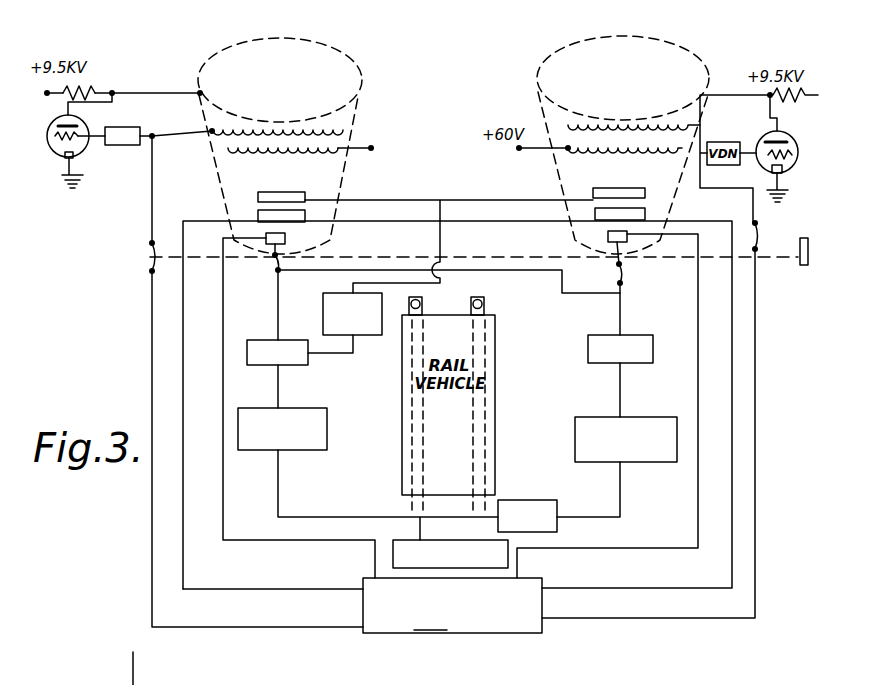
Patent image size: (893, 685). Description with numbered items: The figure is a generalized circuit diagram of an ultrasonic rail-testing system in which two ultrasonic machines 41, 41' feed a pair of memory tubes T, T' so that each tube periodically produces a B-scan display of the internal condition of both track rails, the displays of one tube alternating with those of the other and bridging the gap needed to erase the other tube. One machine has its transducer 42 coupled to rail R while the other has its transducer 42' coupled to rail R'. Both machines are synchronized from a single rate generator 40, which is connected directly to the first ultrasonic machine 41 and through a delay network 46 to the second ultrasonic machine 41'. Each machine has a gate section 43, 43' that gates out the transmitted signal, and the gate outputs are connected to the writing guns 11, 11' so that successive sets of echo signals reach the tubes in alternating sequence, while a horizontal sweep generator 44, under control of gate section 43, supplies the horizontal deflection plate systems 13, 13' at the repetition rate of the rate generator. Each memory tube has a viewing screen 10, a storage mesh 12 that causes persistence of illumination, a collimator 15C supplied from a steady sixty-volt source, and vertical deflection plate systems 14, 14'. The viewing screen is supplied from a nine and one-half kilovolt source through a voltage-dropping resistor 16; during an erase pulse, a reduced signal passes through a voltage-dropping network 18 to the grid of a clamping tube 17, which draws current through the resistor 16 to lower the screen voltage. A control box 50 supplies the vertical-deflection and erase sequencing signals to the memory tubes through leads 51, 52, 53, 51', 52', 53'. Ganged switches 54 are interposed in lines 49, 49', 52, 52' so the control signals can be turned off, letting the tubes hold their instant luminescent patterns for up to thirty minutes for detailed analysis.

The memory tube T is at (366, 36).
The memory tube T' is at (720, 37).
The viewing screen 10 is at (352, 78).
The storage mesh 12 is at (238, 130).
The collimator 15C is at (300, 150).
The horizontal deflection plate system 13 is at (291, 184).
The horizontal deflection plate system 13' is at (619, 175).
The vertical deflection plate system 14 is at (266, 198).
The vertical deflection plate system 14' is at (634, 188).
The writing gun 11 is at (296, 232).
The writing gun 11' is at (577, 231).
The voltage-dropping resistor 16 is at (86, 93).
The clamping tube 17 is at (52, 152).
The voltage-dropping network 18 is at (128, 146).
The ganged switches 54 is at (168, 238).
The line 49 is at (258, 305).
The line 49' is at (647, 305).
The horizontal sweep generator 44 is at (323, 305).
The gate section 43 is at (277, 339).
The gate section 43' is at (631, 332).
The ultrasonic machine 41 is at (290, 412).
The ultrasonic machine 41' is at (618, 423).
The transducer 42 is at (436, 301).
The transducer 42' is at (502, 303).
The rail R is at (391, 433).
The rail R' is at (512, 416).
The delay network 46 is at (512, 500).
The rate generator 40 is at (393, 546).
The control box 50 is at (452, 605).
The lead 51 is at (311, 405).
The lead 51' is at (586, 404).
The lead 52 is at (285, 647).
The lead 52' is at (626, 636).
The lead 53 is at (343, 557).
The lead 53' is at (596, 535).